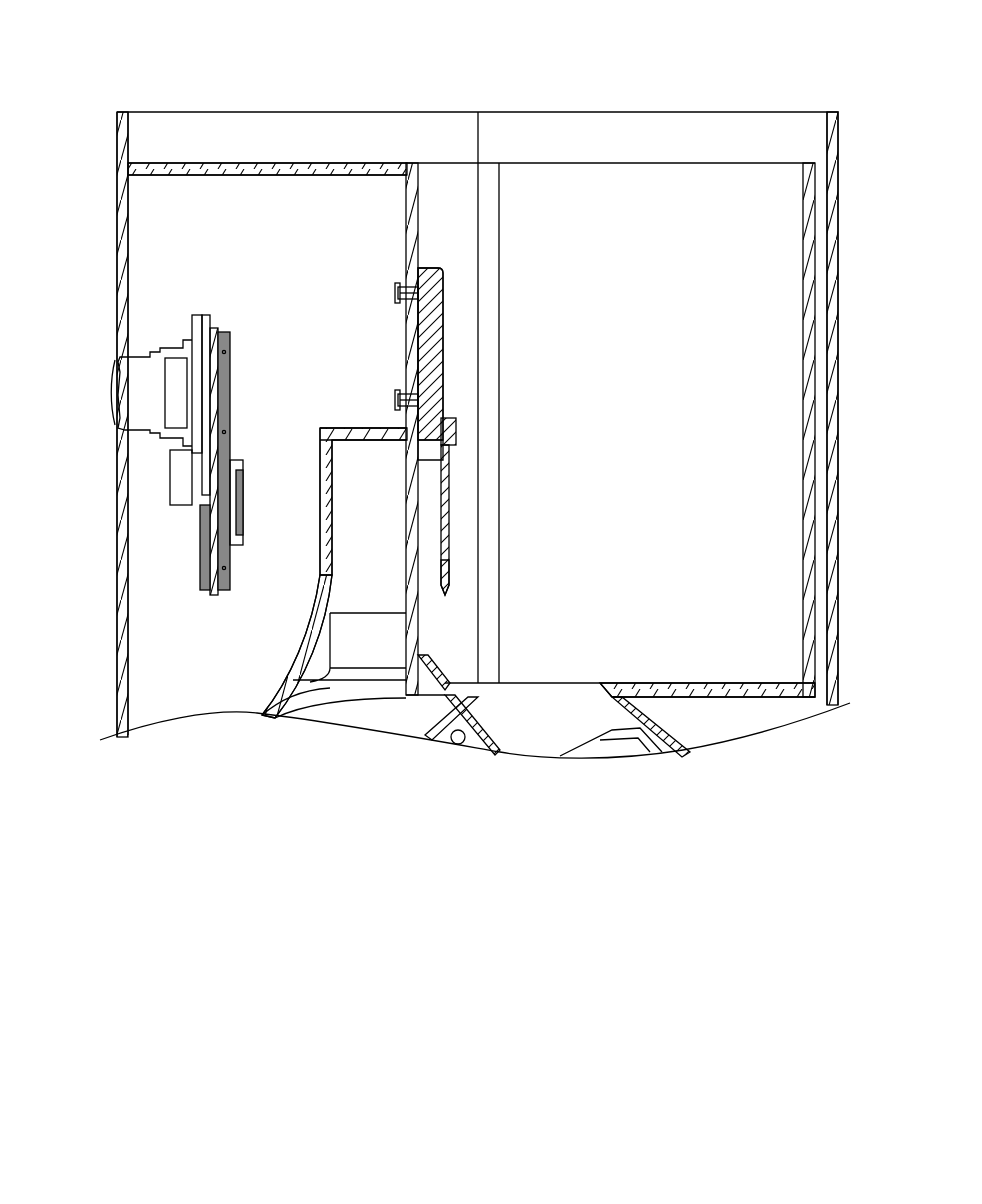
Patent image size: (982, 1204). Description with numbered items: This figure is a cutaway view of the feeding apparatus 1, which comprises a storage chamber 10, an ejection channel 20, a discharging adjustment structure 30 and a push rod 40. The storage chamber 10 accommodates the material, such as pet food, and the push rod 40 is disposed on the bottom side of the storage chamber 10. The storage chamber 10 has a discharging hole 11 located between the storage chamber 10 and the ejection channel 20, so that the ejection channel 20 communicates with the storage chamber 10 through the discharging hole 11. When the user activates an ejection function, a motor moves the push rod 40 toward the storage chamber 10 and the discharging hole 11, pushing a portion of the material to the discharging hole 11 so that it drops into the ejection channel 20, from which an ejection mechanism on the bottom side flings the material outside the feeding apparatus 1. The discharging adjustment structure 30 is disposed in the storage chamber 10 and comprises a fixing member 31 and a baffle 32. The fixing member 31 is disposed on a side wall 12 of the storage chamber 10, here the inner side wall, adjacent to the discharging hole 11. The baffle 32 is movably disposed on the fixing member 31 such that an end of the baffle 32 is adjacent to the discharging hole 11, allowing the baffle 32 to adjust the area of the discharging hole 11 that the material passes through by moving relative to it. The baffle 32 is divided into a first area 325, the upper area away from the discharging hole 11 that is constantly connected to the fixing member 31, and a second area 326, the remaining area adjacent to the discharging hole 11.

The feeding apparatus 1 is at (131, 73).
The storage chamber 10 is at (748, 186).
The discharging hole 11 is at (415, 497).
The side wall 12 is at (418, 182).
The ejection channel 20 is at (365, 698).
The discharging adjustment structure 30 is at (448, 267).
The fixing member 31 is at (444, 306).
The baffle 32 is at (450, 500).
The first area 325 is at (452, 441).
The second area 326 is at (450, 531).
The push rod 40 is at (615, 752).